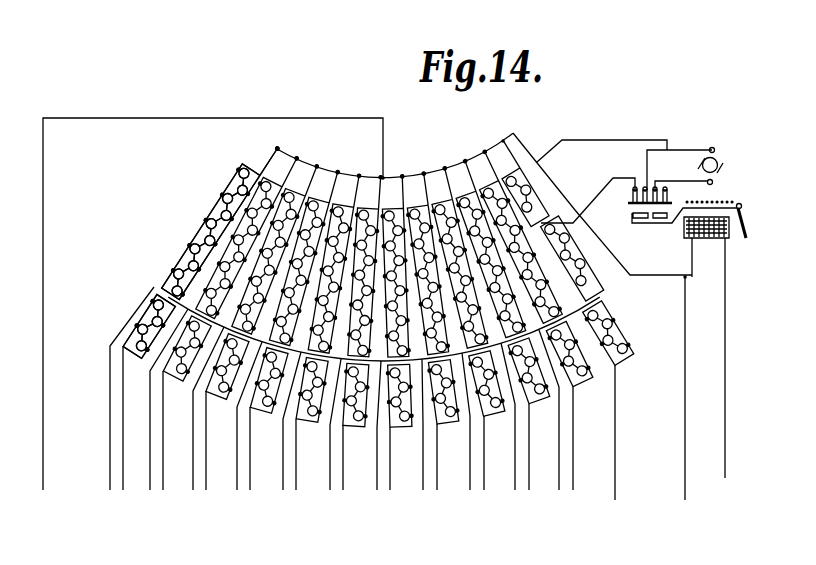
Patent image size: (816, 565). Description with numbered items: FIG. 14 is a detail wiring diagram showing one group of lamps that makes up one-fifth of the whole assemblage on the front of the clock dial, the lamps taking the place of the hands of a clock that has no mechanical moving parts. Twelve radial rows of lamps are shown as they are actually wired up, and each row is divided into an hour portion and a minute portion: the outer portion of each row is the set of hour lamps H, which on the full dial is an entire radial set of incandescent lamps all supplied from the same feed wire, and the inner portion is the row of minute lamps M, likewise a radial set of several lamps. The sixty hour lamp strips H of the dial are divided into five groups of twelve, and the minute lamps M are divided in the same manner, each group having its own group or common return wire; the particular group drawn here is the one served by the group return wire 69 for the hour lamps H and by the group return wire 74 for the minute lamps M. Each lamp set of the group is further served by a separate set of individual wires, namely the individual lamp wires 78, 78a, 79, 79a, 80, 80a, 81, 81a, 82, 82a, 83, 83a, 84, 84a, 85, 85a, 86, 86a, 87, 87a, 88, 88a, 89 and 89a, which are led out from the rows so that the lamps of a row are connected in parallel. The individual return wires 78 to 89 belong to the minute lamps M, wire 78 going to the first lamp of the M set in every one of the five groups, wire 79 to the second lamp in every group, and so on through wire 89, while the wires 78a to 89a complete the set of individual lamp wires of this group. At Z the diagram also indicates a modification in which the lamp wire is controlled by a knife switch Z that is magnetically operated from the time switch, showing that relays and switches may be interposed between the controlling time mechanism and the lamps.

The group return wire 69 is at (178, 118).
The group return wire 74 is at (619, 263).
The individual return wire 78 is at (613, 436).
The individual lamp wire 78a is at (726, 370).
The individual return wire 79 is at (573, 490).
The individual lamp wire 79a is at (562, 488).
The individual return wire 80 is at (529, 492).
The individual lamp wire 80a is at (518, 488).
The individual return wire 81 is at (483, 490).
The individual lamp wire 81a is at (472, 486).
The individual return wire 82 is at (437, 480).
The individual lamp wire 82a is at (426, 486).
The individual return wire 83 is at (390, 474).
The individual lamp wire 83a is at (379, 486).
The individual return wire 84 is at (343, 465).
The individual lamp wire 84a is at (332, 488).
The individual return wire 85 is at (296, 465).
The individual lamp wire 85a is at (285, 483).
The individual return wire 86 is at (250, 468).
The individual lamp wire 86a is at (239, 488).
The individual return wire 87 is at (206, 468).
The individual lamp wire 87a is at (195, 484).
The individual return wire 88 is at (163, 464).
The individual lamp wire 88a is at (152, 480).
The individual return wire 89 is at (123, 438).
The individual lamp wire 89a is at (110, 373).
The hour lamps H is at (205, 232).
The minute lamps M is at (142, 323).
The knife switch Z is at (721, 166).